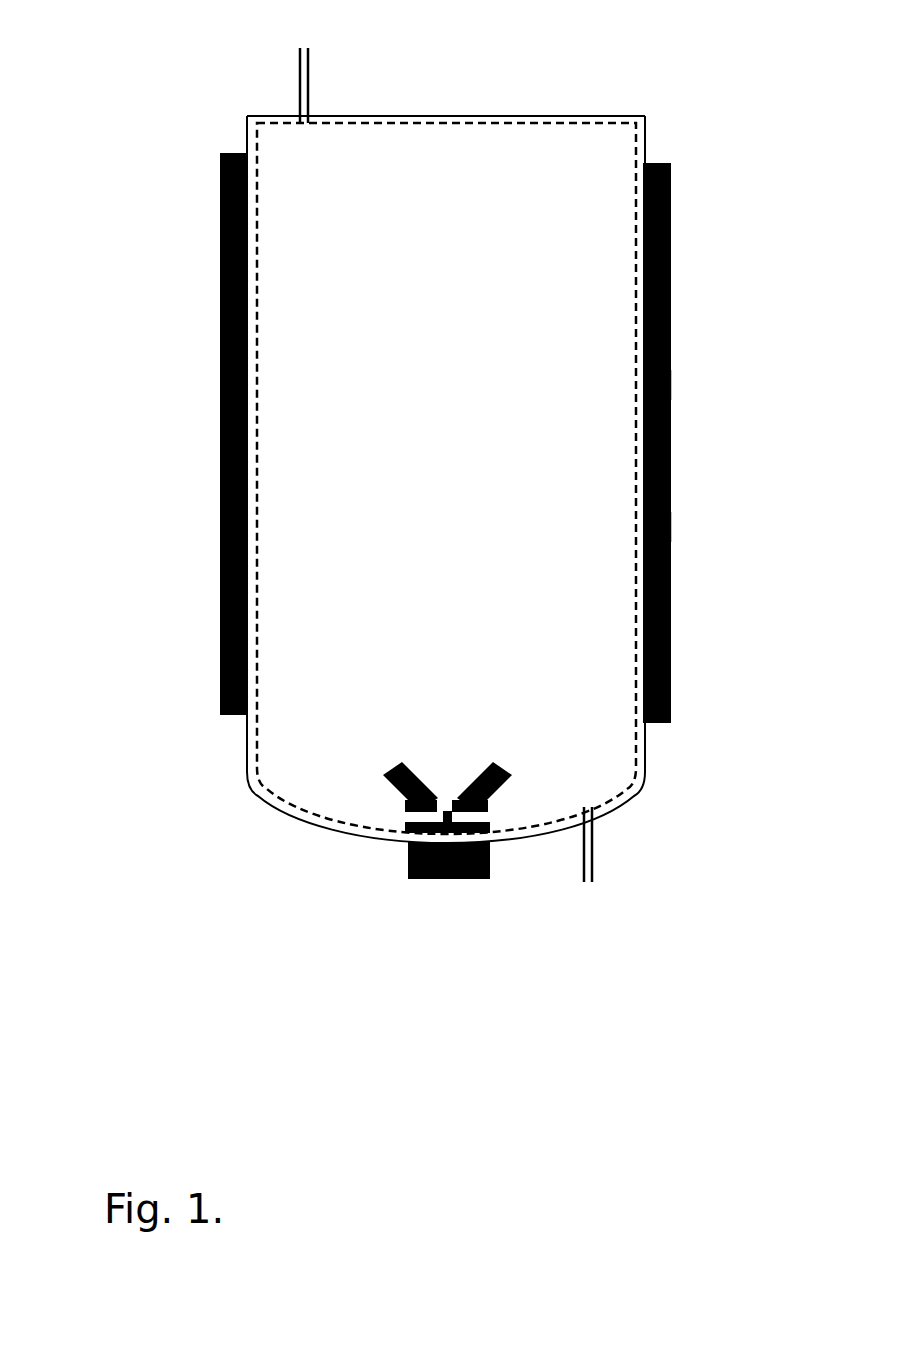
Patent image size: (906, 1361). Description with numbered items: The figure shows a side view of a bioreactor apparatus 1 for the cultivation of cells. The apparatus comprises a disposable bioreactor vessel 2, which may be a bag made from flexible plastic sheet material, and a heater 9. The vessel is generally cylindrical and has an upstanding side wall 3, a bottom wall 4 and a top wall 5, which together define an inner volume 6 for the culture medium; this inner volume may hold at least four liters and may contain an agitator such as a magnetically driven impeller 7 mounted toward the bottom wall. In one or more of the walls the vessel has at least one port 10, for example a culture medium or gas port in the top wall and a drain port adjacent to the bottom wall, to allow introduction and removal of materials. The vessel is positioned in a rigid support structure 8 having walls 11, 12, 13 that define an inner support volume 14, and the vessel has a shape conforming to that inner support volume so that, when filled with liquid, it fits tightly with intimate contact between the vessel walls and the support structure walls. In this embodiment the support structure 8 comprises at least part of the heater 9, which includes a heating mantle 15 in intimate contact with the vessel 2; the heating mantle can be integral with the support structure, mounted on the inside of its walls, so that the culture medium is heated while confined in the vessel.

The bioreactor apparatus 1 is at (143, 462).
The disposable bioreactor vessel 2 is at (636, 143).
The side wall 3 is at (257, 735).
The bottom wall 4 is at (310, 813).
The top wall 5 is at (447, 123).
The inner volume 6 is at (437, 314).
The bottom stirrer/valve 7 is at (443, 800).
The rigid support structure 8 is at (645, 770).
The heater 9 is at (670, 527).
The port 10 is at (300, 113).
The support structure wall 11 is at (247, 132).
The support structure wall 12 is at (353, 837).
The support structure wall 13 is at (560, 115).
The inner support volume 14 is at (466, 534).
The heating mantle 15 is at (670, 386).